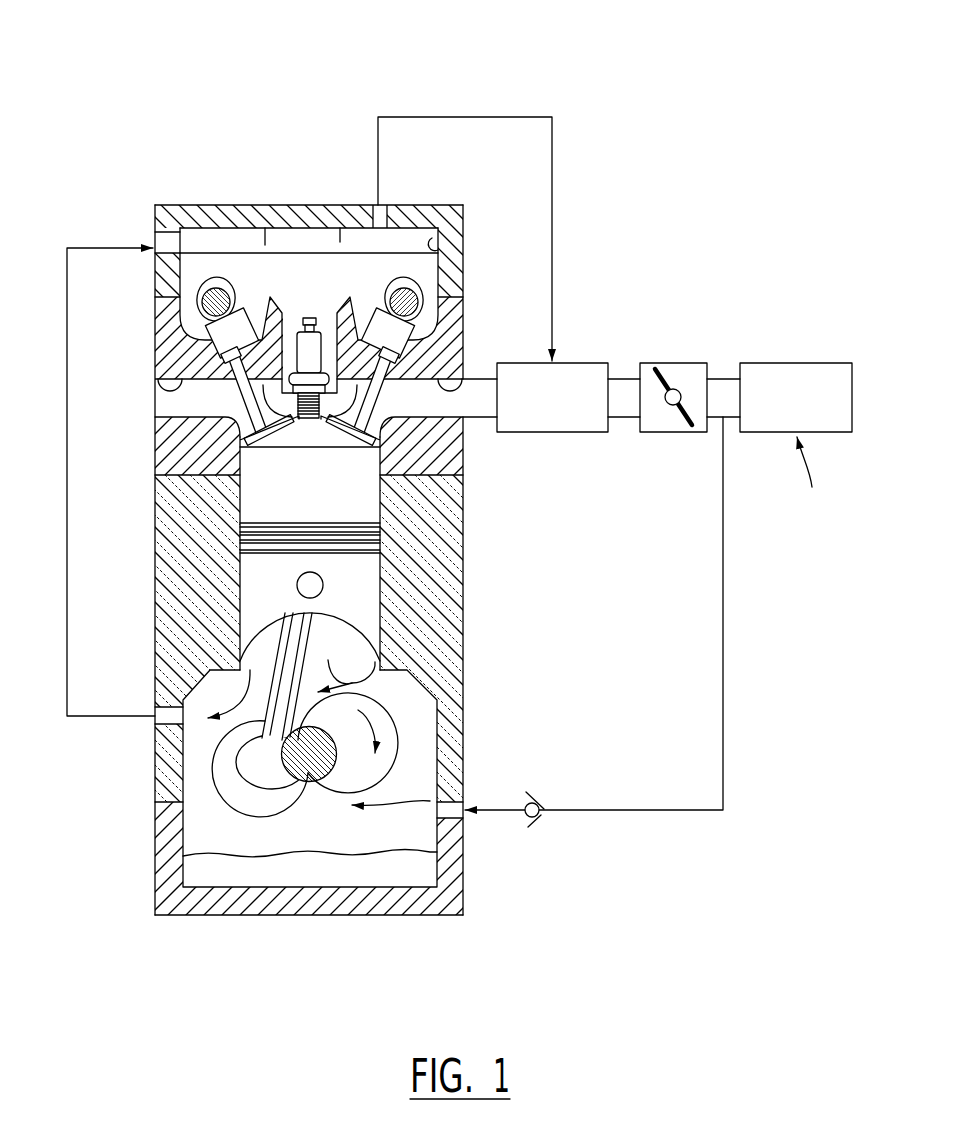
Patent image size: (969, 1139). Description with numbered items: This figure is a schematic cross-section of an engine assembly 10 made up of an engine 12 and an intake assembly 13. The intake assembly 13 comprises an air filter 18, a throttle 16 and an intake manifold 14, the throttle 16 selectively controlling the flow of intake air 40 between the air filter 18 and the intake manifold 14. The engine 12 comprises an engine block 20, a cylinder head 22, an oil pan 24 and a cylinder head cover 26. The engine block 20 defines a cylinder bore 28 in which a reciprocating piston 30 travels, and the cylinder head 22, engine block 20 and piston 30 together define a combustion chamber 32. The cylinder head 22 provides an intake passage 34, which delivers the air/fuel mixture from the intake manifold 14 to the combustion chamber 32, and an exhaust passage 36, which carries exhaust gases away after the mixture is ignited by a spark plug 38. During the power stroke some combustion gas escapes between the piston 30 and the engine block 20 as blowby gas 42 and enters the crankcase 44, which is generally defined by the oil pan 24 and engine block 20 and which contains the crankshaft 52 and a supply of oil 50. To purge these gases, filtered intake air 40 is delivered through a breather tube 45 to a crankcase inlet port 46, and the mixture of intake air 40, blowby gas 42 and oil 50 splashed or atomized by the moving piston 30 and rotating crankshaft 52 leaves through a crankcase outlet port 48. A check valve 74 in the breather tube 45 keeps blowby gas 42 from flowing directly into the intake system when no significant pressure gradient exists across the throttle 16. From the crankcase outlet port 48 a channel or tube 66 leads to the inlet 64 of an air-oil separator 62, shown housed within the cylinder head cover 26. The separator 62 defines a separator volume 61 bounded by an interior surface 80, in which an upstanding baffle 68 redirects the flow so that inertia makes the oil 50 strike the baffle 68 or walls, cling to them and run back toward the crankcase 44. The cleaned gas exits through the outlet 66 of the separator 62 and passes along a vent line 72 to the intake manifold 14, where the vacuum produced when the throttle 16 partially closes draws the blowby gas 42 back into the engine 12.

The engine assembly 10 is at (148, 86).
The engine 12 is at (146, 470).
The intake assembly 13 is at (653, 465).
The intake manifold 14 is at (561, 411).
The throttle 16 is at (676, 364).
The air filter 18 is at (805, 411).
The engine block 20 is at (463, 631).
The cylinder head 22 is at (463, 305).
The oil pan 24 is at (463, 864).
The cylinder head cover 26 is at (463, 208).
The cylinder bore 28 is at (262, 495).
The reciprocating piston 30 is at (375, 585).
The combustion chamber 32 is at (319, 514).
The intake passage 34 is at (463, 358).
The exhaust passage 36 is at (155, 381).
The spark plug 38 is at (307, 319).
The intake air 40 is at (809, 481).
The blowby gas 42 is at (346, 659).
The crankcase 44 is at (420, 785).
The breather tube 45 is at (723, 636).
The crankcase inlet port 46 is at (432, 814).
The crankcase outlet port 48 is at (186, 720).
The oil 50 is at (383, 880).
The crankshaft 52 is at (385, 715).
The separator volume 61 is at (407, 230).
The air-oil separator 62 is at (463, 231).
The inlet 64 is at (181, 248).
The outlet 66 is at (375, 205).
The baffle 68 is at (262, 248).
The vent line 72 is at (553, 208).
The check valve 74 is at (542, 817).
The interior surface 80 is at (283, 237).